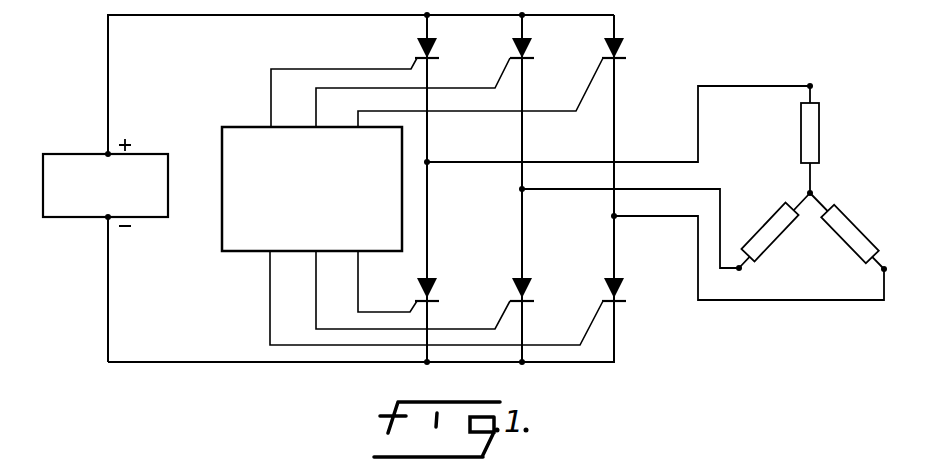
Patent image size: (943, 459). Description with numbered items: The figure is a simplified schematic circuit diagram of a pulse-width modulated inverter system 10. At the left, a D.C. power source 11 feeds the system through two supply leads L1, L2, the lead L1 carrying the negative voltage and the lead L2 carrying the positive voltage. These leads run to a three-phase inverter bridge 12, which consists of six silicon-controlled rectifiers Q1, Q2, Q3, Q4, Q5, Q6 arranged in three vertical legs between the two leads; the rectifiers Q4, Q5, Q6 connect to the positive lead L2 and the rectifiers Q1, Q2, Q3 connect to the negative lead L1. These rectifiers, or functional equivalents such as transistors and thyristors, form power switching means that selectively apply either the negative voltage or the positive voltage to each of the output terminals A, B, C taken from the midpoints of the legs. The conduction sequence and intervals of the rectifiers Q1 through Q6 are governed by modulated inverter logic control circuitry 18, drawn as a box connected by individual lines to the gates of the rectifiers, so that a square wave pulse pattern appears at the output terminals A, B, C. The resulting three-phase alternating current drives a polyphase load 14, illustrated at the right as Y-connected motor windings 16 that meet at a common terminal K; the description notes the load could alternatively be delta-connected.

The pulse-width modulated inverter system 10 is at (298, 383).
The D.C. power source 11 is at (76, 130).
The three-phase inverter bridge 12 is at (475, 188).
The polyphase load 14 is at (660, 183).
The Y-connected motor windings 16 is at (800, 138).
The modulated inverter logic control circuitry 18 is at (248, 253).
The supply lead L1 is at (108, 300).
The supply lead L2 is at (108, 45).
The silicon-controlled rectifier Q1 is at (414, 289).
The silicon-controlled rectifier Q2 is at (509, 289).
The silicon-controlled rectifier Q3 is at (626, 291).
The silicon-controlled rectifier Q4 is at (414, 45).
The silicon-controlled rectifier Q5 is at (510, 45).
The silicon-controlled rectifier Q6 is at (626, 48).
The output terminal A is at (812, 86).
The output terminal B is at (741, 270).
The output terminal C is at (881, 271).
The common terminal K is at (813, 193).